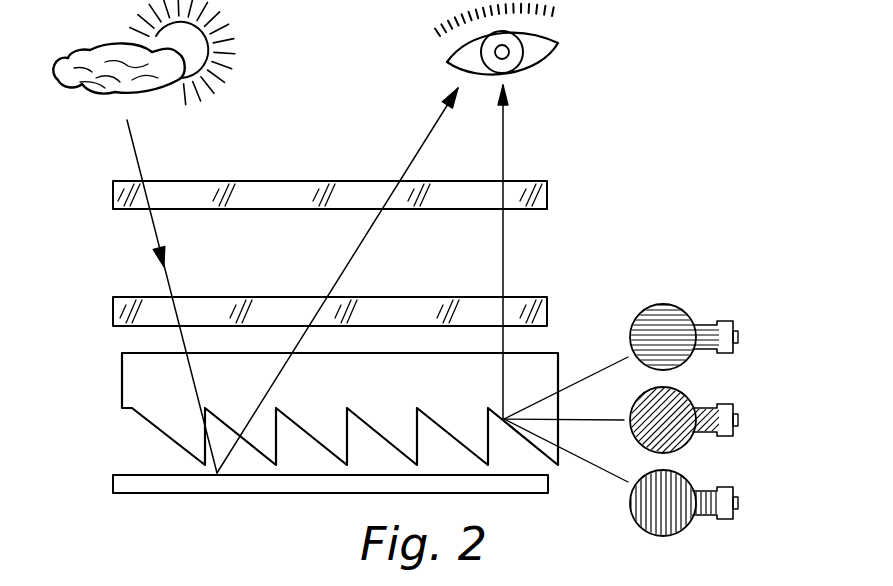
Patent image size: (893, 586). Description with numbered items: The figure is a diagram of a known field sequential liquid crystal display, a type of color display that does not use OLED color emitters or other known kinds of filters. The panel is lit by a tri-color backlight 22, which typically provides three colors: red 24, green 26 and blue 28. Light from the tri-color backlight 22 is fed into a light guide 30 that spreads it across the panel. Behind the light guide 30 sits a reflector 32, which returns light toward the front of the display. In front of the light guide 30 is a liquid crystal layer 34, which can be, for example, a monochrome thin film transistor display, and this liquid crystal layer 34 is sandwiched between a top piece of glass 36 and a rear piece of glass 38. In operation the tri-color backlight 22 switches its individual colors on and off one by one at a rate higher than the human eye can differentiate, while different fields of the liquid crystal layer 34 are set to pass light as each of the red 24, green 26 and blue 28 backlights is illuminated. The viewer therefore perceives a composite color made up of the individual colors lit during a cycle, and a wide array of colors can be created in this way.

The tri-color backlight 22 is at (677, 405).
The red color 24 is at (680, 306).
The green color 26 is at (680, 388).
The blue color 28 is at (690, 496).
The light guide 30 is at (150, 382).
The reflector 32 is at (178, 487).
The liquid crystal layer 34 is at (540, 248).
The top piece of glass 36 is at (547, 190).
The rear piece of glass 38 is at (547, 307).